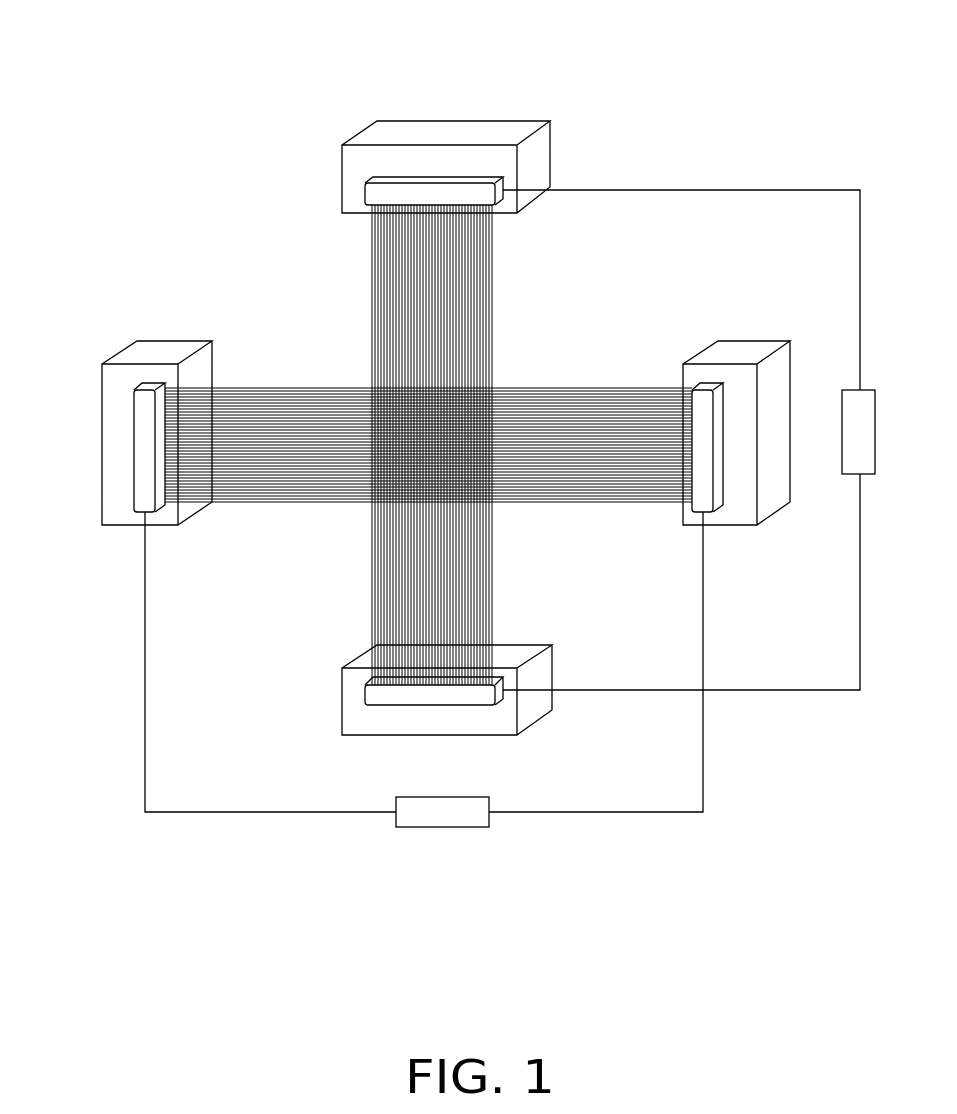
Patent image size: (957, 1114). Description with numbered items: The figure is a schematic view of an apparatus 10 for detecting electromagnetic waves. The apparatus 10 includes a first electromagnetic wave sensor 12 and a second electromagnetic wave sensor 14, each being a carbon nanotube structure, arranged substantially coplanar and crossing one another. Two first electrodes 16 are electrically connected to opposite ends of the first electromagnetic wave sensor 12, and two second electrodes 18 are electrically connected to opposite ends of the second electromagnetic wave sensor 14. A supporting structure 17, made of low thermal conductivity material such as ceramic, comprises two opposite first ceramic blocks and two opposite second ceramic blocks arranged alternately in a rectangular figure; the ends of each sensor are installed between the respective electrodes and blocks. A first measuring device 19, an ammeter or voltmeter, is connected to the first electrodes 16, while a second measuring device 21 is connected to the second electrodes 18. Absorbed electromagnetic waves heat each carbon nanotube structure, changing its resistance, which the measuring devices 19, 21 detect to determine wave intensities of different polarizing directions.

The apparatus for detecting electromagnetic waves 10 is at (486, 32).
The first electromagnetic wave sensor 12 is at (485, 584).
The second electromagnetic wave sensor 14 is at (605, 405).
The first electrodes 16 is at (375, 197).
The supporting structure 17 is at (122, 463).
The second electrodes 18 is at (143, 410).
The first measuring device 19 is at (848, 410).
The second measuring device 21 is at (450, 815).